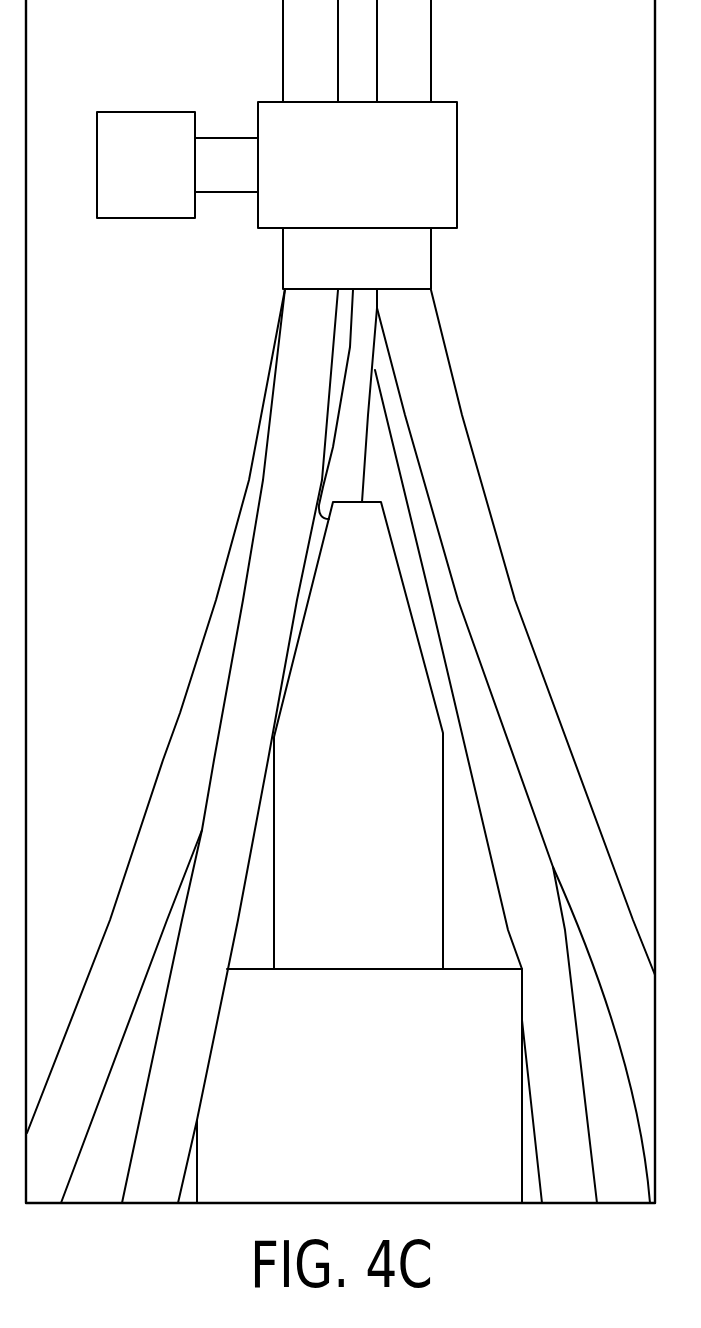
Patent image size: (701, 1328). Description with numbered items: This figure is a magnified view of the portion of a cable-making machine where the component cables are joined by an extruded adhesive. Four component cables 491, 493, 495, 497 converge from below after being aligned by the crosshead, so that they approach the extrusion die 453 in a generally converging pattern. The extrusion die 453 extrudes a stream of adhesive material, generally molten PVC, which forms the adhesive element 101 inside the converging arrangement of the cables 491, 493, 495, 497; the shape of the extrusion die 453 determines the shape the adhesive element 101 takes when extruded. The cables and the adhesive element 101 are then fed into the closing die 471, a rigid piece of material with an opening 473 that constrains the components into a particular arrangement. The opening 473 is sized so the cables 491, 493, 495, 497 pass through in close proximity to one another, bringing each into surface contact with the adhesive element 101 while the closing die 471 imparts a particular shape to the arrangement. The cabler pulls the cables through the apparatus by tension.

The closing die 471 is at (440, 158).
The opening 473 is at (416, 257).
The adhesive element 101 is at (343, 480).
The extrusion die 453 is at (403, 677).
The cable 491 is at (473, 515).
The cable 493 is at (297, 338).
The cable 495 is at (227, 602).
The cable 497 is at (502, 797).